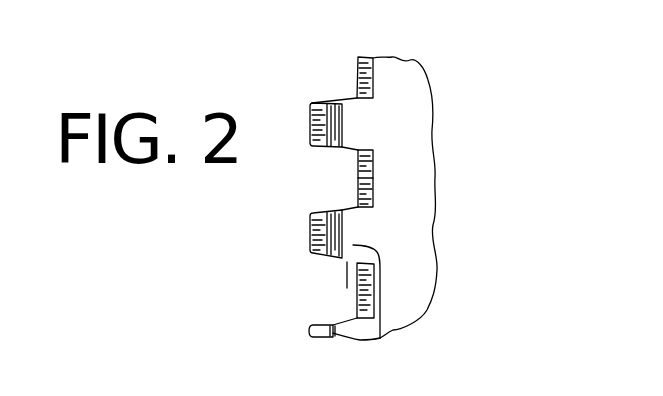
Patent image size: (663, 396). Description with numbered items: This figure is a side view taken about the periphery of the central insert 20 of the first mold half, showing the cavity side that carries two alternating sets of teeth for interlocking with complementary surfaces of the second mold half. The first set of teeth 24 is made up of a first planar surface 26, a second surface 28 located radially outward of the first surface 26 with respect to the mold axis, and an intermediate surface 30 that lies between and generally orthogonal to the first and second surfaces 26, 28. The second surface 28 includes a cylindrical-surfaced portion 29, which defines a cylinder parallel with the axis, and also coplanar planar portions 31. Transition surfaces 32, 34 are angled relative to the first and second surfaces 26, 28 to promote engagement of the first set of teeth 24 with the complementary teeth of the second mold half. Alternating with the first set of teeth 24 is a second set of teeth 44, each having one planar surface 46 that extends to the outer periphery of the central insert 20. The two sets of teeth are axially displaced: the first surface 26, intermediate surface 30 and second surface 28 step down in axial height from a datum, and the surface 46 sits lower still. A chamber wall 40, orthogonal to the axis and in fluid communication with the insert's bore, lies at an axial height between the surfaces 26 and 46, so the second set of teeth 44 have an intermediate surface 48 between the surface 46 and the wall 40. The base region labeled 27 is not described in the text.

The central insert 20 is at (430, 52).
The first set of teeth 24 is at (307, 238).
The first planar surface 26 is at (308, 228).
The base portion 27 is at (399, 356).
The second surface 28 is at (338, 260).
The cylindrical-surfaced portion 29 is at (322, 102).
The intermediate surface 30 is at (308, 211).
The planar portions 31 is at (307, 250).
The transition surface 32 is at (350, 98).
The transition surface 34 is at (347, 288).
The chamber wall 40 is at (356, 164).
The second set of teeth 44 is at (319, 154).
The planar surface 46 is at (356, 178).
The intermediate surface 48 is at (356, 199).